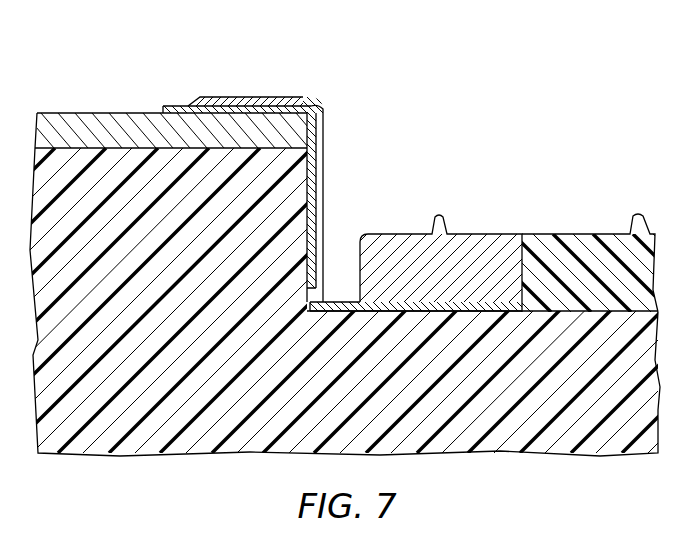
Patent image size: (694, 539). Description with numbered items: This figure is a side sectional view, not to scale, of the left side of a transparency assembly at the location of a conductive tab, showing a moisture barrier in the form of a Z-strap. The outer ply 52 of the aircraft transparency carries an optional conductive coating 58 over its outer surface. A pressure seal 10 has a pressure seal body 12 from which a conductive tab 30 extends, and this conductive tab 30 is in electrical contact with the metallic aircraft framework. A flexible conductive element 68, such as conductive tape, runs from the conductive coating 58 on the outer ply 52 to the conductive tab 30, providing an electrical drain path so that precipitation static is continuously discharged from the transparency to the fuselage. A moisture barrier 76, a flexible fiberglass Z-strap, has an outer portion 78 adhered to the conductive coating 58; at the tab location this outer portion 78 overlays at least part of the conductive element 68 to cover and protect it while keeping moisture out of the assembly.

The outer ply 52 is at (142, 311).
The conductive coating 58 is at (93, 120).
The moisture barrier 76 is at (323, 152).
The outer portion 78 is at (239, 97).
The flexible conductive element 68 is at (340, 300).
The conductive tab 30 is at (473, 243).
The pressure seal 10 is at (563, 238).
The pressure seal body 12 is at (575, 250).